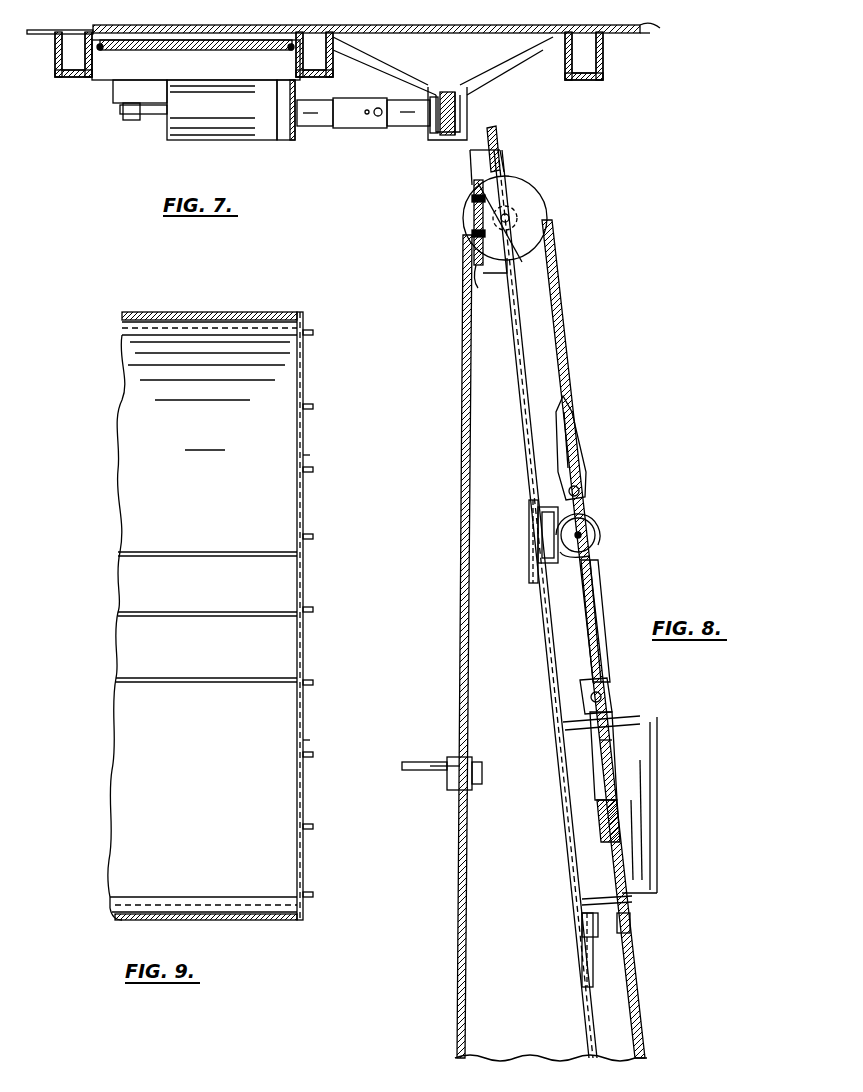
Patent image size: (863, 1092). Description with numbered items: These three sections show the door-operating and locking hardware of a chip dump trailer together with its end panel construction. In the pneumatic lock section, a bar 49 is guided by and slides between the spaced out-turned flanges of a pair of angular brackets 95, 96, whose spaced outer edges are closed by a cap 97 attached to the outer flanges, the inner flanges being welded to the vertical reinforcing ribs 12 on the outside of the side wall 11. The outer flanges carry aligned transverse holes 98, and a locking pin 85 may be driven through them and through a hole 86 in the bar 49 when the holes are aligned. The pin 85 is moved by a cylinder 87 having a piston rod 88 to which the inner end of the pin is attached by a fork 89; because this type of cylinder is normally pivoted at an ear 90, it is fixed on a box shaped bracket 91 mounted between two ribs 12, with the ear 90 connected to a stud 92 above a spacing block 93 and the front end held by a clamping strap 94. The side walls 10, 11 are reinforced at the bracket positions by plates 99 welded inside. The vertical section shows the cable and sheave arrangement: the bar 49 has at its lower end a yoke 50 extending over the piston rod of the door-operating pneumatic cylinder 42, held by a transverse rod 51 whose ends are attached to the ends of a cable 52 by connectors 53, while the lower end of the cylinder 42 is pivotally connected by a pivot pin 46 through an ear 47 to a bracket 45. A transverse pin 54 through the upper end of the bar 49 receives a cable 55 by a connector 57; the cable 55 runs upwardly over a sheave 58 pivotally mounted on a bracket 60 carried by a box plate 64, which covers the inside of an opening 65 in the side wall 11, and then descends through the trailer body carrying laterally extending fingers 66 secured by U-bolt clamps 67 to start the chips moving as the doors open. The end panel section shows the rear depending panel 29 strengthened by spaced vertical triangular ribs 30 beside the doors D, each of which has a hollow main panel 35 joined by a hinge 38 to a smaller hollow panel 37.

In FIG. 9, the side wall 10 is at (232, 312).
In FIG. 7, the side wall 11 is at (212, 27).
In FIG. 8, the side wall 11 is at (518, 406).
In FIG. 9, the side wall 11 is at (250, 920).
In FIG. 7, the ribs 12 is at (55, 76).
In FIG. 9, the rear depending panel 29 is at (323, 597).
In FIG. 9, the triangular ribs 30 is at (313, 407).
In FIG. 9, the main panel 35 is at (126, 403).
In FIG. 9, the smaller hollow panel 37 is at (124, 592).
In FIG. 9, the hinge 38 is at (163, 552).
In FIG. 8, the pneumatic cylinder 42 is at (650, 846).
In FIG. 8, the bracket 45 is at (582, 926).
In FIG. 8, the pivot pin 46 is at (630, 923).
In FIG. 8, the ear 47 is at (632, 897).
In FIG. 7, the bar 49 is at (455, 95).
In FIG. 8, the bar 49 is at (598, 630).
In FIG. 8, the yoke 50 is at (608, 680).
In FIG. 8, the transverse rod 51 is at (602, 695).
In FIG. 8, the cable 52 is at (636, 1010).
In FIG. 8, the connectors 53 is at (640, 716).
In FIG. 8, the transverse pin 54 is at (580, 492).
In FIG. 8, the cable 55 is at (556, 300).
In FIG. 8, the connectors 57 is at (571, 418).
In FIG. 8, the sheave 58 is at (532, 193).
In FIG. 8, the bracket 60 is at (497, 235).
In FIG. 8, the box plate 64 is at (492, 280).
In FIG. 8, the opening 65 is at (500, 156).
In FIG. 8, the fingers 66 is at (440, 758).
In FIG. 8, the U-bolt clamps 67 is at (480, 772).
In FIG. 7, the locking pin 85 is at (402, 110).
In FIG. 7, the hole 86 is at (456, 108).
In FIG. 7, the cylinder 87 is at (215, 135).
In FIG. 8, the cylinder 87 is at (596, 535).
In FIG. 7, the piston rod 88 is at (312, 118).
In FIG. 7, the fork 89 is at (357, 128).
In FIG. 7, the ear 90 is at (144, 114).
In FIG. 8, the ear 90 is at (592, 556).
In FIG. 7, the box shaped bracket 91 is at (121, 45).
In FIG. 8, the box shaped bracket 91 is at (540, 507).
In FIG. 7, the stud 92 is at (123, 118).
In FIG. 7, the spacing block 93 is at (113, 98).
In FIG. 7, the clamping strap 94 is at (284, 140).
In FIG. 8, the clamping strap 94 is at (598, 520).
In FIG. 7, the angular bracket 95 is at (380, 60).
In FIG. 7, the angular bracket 96 is at (478, 72).
In FIG. 7, the cap 97 is at (447, 140).
In FIG. 7, the transverse holes 98 is at (428, 128).
In FIG. 7, the plates 99 is at (658, 34).
In FIG. 8, the plates 99 is at (531, 560).
In FIG. 9, the doors D is at (135, 482).